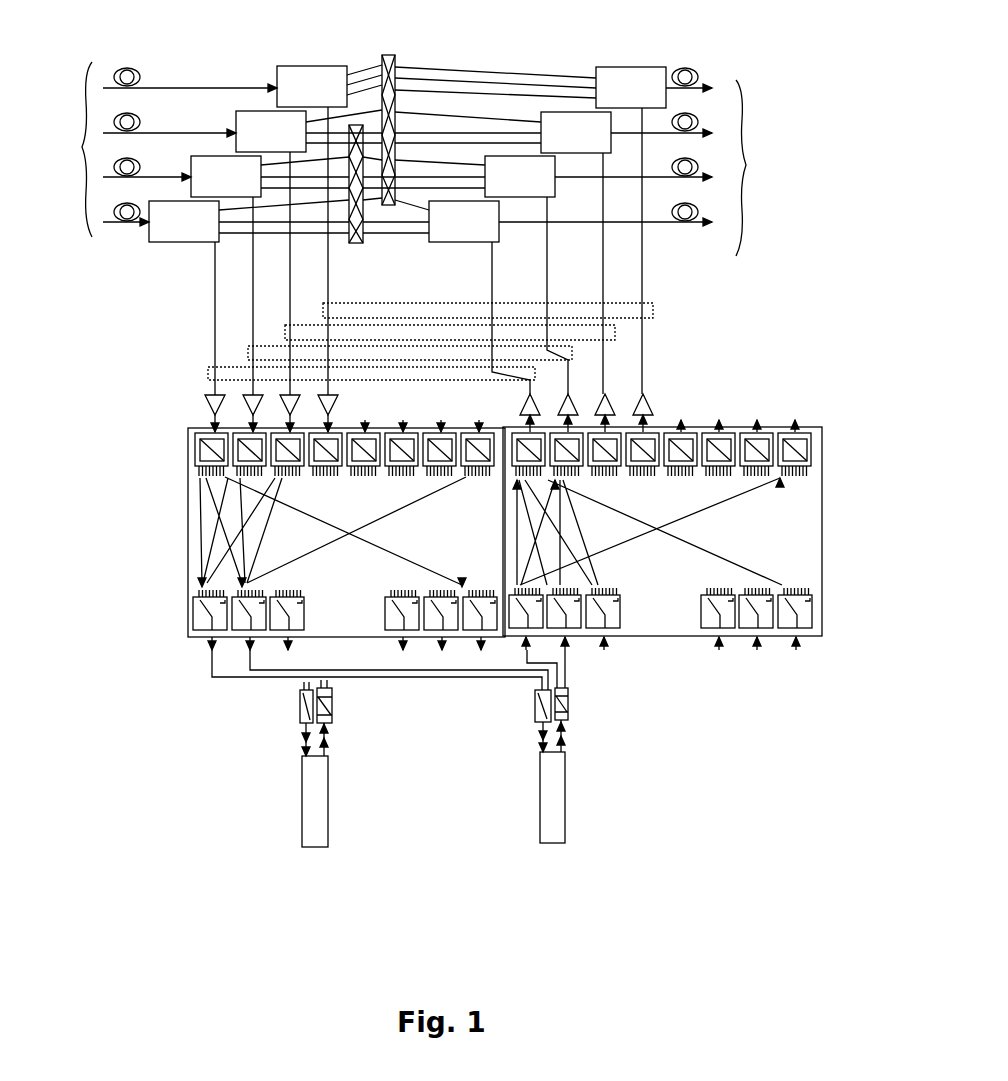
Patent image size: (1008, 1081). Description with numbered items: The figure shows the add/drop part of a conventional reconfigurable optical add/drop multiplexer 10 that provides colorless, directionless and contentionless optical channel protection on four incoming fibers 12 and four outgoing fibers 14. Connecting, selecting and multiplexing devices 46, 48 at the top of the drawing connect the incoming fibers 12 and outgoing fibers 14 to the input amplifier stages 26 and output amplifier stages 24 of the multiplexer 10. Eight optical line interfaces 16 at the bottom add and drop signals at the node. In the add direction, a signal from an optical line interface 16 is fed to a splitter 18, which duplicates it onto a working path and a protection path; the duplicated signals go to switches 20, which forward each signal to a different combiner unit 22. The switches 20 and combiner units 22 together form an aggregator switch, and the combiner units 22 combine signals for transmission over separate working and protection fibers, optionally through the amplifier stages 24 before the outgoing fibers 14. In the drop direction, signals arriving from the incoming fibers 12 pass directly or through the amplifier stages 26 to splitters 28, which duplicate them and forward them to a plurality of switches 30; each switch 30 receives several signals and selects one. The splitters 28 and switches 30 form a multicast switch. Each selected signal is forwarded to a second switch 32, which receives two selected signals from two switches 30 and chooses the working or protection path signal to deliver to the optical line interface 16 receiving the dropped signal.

The reconfigurable optical add/drop multiplexer (ROADM) 10 is at (780, 392).
The incoming fibers 12 is at (157, 149).
The outgoing fibers 14 is at (642, 162).
The optical line interfaces 16 is at (570, 857).
The splitter 18 is at (583, 703).
The switches 20 is at (826, 612).
The combiner units 22 is at (830, 452).
The output amplifier stages 24 is at (655, 403).
The input amplifier stages 26 is at (197, 407).
The splitters 28 is at (183, 455).
The switches 30 is at (175, 615).
The second switch 32 is at (533, 707).
The connecting, selecting and multiplexing device 46 is at (665, 297).
The connecting, selecting and multiplexing device 48 is at (677, 45).